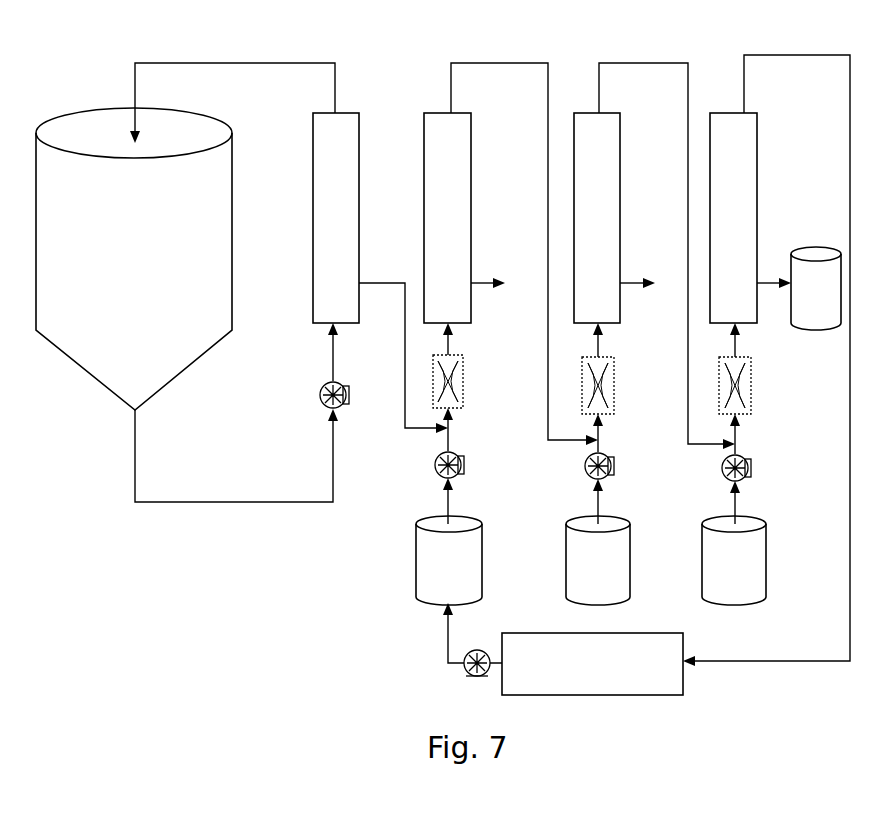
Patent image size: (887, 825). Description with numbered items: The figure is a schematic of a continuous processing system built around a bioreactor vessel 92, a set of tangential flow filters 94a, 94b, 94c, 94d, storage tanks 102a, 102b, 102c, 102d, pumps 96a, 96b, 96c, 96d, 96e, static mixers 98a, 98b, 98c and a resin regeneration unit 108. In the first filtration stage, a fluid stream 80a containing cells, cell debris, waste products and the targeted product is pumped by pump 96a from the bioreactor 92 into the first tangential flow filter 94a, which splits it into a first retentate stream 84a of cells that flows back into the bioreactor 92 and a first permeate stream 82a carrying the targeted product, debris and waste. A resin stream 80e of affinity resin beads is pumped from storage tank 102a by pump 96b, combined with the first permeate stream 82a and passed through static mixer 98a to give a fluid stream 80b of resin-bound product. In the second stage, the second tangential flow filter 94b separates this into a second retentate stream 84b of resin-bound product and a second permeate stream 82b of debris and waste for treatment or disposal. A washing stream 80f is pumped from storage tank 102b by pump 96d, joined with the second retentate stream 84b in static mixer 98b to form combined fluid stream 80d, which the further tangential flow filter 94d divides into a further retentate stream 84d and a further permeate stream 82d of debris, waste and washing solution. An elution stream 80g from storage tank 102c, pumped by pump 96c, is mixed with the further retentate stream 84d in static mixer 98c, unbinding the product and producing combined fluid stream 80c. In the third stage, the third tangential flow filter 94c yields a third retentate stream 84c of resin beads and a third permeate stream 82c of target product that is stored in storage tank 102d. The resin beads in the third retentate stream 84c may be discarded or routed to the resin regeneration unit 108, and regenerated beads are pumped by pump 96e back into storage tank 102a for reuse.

The bioreactor vessel 92 is at (187, 305).
The first retentate stream 84a is at (262, 63).
The second retentate stream 84b is at (495, 63).
The third retentate stream 84c is at (809, 53).
The further retentate stream 84d is at (659, 60).
The first tangential flow filter 94a is at (336, 218).
The second tangential flow filter 94b is at (447, 218).
The third tangential flow filter 94c is at (733, 218).
The further tangential flow filter 94d is at (597, 218).
The first permeate stream 82a is at (388, 283).
The second permeate stream 82b is at (482, 283).
The third permeate stream 82c is at (766, 283).
The further permeate stream 82d is at (632, 283).
The fluid stream 80a is at (333, 356).
The fluid stream 80b is at (446, 348).
The combined fluid stream 80c is at (733, 350).
The combined fluid stream 80d is at (596, 350).
The resin stream 80e is at (446, 509).
The washing stream 80f is at (594, 509).
The elution stream 80g is at (731, 511).
The pump 96a is at (319, 398).
The pump 96b is at (434, 468).
The pump 96c is at (720, 470).
The pump 96d is at (584, 468).
The pump 96e is at (483, 645).
The static mixer 98a is at (465, 382).
The static mixer 98b is at (616, 386).
The static mixer 98c is at (753, 388).
The storage tank 102a is at (449, 560).
The storage tank 102b is at (598, 560).
The storage tank 102c is at (734, 560).
The storage tank 102d is at (816, 288).
The resin regeneration unit 108 is at (592, 664).